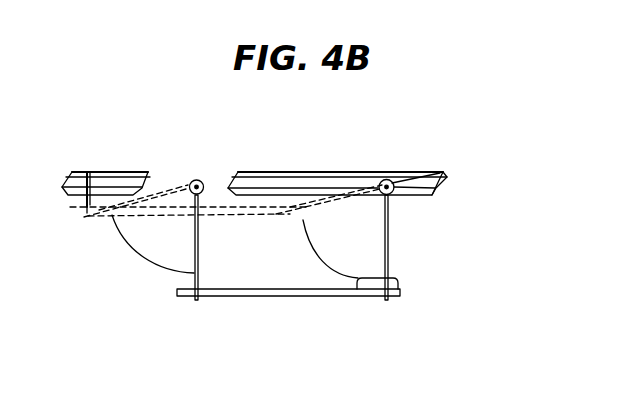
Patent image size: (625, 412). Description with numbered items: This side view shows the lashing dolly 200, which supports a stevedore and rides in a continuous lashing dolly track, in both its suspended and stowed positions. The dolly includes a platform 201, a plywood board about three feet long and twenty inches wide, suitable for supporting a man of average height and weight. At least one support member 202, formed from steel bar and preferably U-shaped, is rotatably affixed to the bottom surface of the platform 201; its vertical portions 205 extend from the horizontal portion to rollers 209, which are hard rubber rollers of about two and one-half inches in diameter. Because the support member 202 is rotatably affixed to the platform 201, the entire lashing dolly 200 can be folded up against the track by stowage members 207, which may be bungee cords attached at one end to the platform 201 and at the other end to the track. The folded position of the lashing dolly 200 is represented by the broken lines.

The lashing dolly 200 is at (421, 300).
The platform 201 is at (277, 298).
The support member 202 is at (393, 255).
The vertical portions 205 is at (388, 240).
The stowage members 207 is at (73, 198).
The roller 209 is at (425, 172).